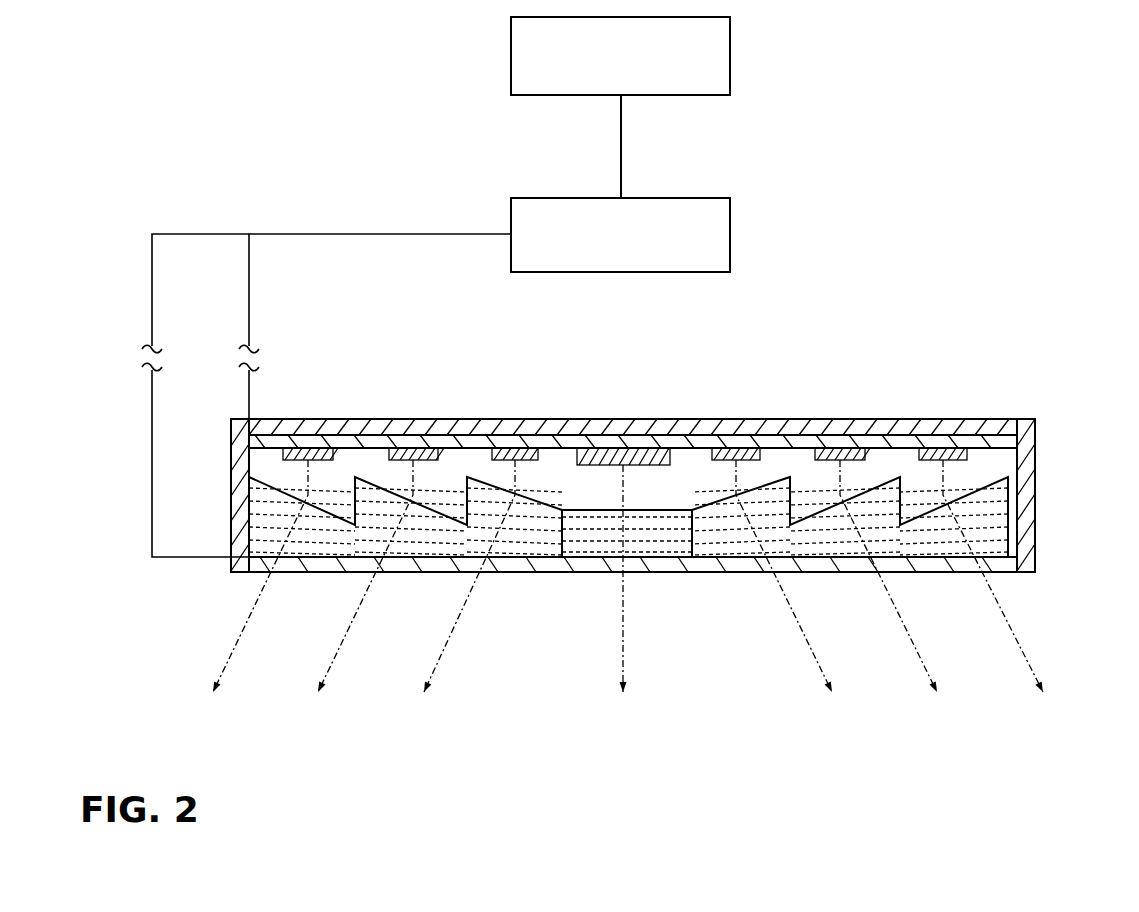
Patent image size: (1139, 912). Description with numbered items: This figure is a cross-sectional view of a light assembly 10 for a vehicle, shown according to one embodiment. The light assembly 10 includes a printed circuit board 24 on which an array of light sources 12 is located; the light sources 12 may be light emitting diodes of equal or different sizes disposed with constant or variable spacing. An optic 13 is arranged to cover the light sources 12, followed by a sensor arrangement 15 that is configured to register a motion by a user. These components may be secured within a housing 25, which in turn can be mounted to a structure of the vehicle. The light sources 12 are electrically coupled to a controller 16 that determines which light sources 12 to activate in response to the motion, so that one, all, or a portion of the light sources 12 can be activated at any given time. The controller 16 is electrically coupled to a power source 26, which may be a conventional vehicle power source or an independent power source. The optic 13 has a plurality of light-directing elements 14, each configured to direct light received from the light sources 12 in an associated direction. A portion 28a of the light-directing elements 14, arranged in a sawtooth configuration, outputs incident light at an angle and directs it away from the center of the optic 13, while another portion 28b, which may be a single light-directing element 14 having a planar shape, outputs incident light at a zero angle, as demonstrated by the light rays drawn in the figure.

The light assembly 10 is at (912, 185).
The light sources 12 is at (397, 450).
The optic 13 is at (1010, 511).
The light-directing elements 14 is at (270, 480).
The sensor arrangement 15 is at (963, 572).
The controller 16 is at (732, 225).
The printed circuit board 24 is at (977, 440).
The housing 25 is at (1035, 457).
The power source 26 is at (732, 55).
The portion of the light-directing elements 28a is at (372, 528).
The portion of the light-directing elements 28b is at (598, 537).